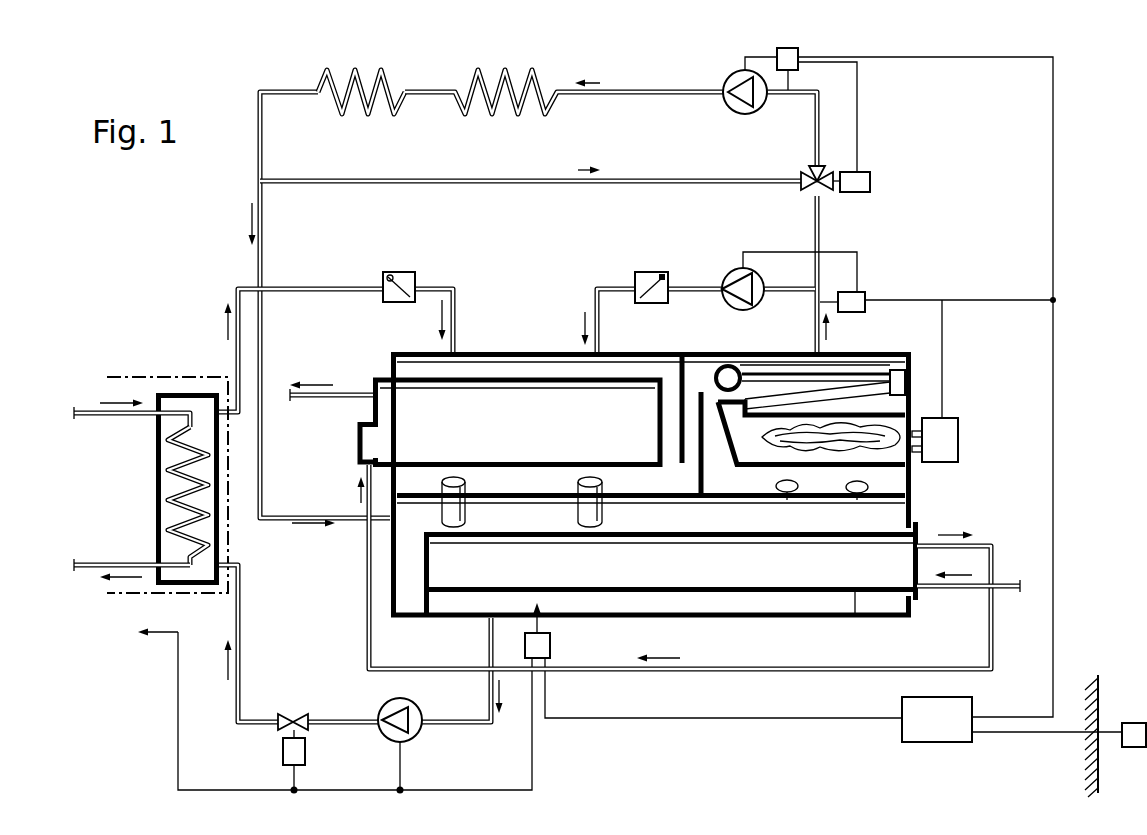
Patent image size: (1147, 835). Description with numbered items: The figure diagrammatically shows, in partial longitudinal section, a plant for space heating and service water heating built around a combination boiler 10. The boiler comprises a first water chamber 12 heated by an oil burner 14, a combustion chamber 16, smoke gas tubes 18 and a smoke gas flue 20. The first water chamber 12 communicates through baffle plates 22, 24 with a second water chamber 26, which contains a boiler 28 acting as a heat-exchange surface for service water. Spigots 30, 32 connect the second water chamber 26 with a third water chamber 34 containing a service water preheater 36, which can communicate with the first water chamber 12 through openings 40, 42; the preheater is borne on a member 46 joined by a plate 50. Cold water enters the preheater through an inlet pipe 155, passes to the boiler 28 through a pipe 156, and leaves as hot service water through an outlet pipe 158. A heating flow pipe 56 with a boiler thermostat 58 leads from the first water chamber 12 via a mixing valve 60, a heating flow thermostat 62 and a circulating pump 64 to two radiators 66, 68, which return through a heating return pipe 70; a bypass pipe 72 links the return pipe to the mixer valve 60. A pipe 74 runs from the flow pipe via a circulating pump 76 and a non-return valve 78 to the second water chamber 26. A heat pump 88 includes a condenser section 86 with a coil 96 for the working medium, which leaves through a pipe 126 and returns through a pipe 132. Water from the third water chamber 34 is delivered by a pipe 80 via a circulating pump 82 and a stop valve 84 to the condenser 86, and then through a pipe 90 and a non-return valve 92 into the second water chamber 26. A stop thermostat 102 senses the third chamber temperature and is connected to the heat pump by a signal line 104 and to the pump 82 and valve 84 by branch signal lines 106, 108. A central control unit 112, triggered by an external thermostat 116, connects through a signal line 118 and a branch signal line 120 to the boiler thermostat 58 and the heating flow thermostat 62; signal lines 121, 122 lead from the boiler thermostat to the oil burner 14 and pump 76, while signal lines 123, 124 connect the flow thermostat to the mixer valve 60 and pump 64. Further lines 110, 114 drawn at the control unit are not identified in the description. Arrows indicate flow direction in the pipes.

The combination boiler 10 is at (533, 340).
The first water chamber 12 is at (858, 367).
The oil burner 14 is at (958, 443).
The combustion chamber 16 is at (898, 455).
The smoke gas tubes 18 is at (790, 401).
The smoke gas flue 20 is at (733, 368).
The baffle plate 22 is at (680, 378).
The baffle plate 24 is at (703, 392).
The second water chamber 26 is at (489, 370).
The boiler 28 is at (375, 422).
The spigot 30 is at (462, 512).
The spigot 32 is at (602, 512).
The third water chamber 34 is at (405, 528).
The service water preheater 36 is at (437, 570).
The opening 40 is at (787, 498).
The opening 42 is at (857, 498).
The member 46 is at (703, 607).
The plate 50 is at (422, 605).
The heating flow pipe 56 is at (660, 90).
The boiler thermostat 58 is at (866, 290).
The mixing valve 60 is at (830, 190).
The heating flow thermostat 62 is at (795, 50).
The circulating pump 64 is at (728, 75).
The radiator 66 is at (512, 72).
The radiator 68 is at (360, 72).
The heating return pipe 70 is at (283, 90).
The bypass pipe 72 is at (510, 177).
The pipe 74 is at (692, 285).
The circulating pump 76 is at (735, 270).
The non-return valve 78 is at (638, 272).
The pipe 80 is at (335, 720).
The circulating pump 82 is at (418, 712).
The stop valve 84 is at (283, 728).
The condenser section 86 is at (144, 485).
The heat pump 88 is at (113, 598).
The pipe 90 is at (333, 287).
The non-return valve 92 is at (398, 272).
The coil 96 is at (168, 503).
The stop thermostat 102 is at (550, 648).
The signal line 104 is at (496, 790).
The branch signal line 106 is at (405, 763).
The branch signal line 108 is at (302, 776).
The signal line 110 is at (790, 717).
The central control unit 112 is at (932, 742).
The supply line 114 is at (1032, 735).
The external thermostat 116 is at (1135, 748).
The signal line 118 is at (1058, 358).
The branch signal line 120 is at (973, 298).
The signal line 121 is at (943, 333).
The signal line 122 is at (772, 250).
The signal line 123 is at (860, 117).
The signal line 124 is at (760, 55).
The pipe 126 is at (100, 564).
The pipe 132 is at (95, 416).
The inlet pipe 155 is at (957, 590).
The pipe 156 is at (785, 668).
The service hot water outlet pipe 158 is at (345, 393).